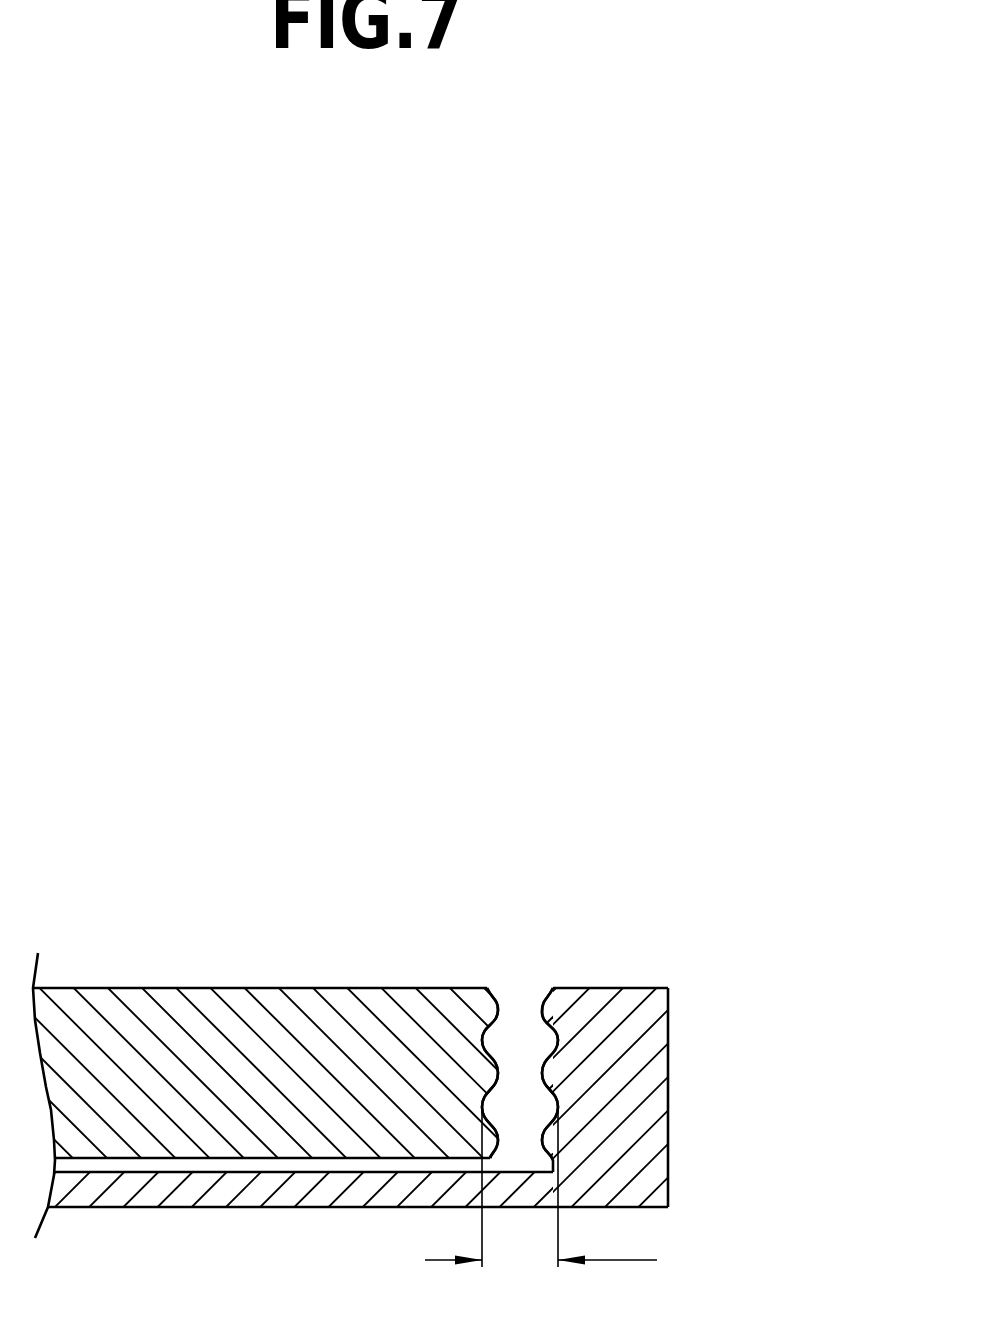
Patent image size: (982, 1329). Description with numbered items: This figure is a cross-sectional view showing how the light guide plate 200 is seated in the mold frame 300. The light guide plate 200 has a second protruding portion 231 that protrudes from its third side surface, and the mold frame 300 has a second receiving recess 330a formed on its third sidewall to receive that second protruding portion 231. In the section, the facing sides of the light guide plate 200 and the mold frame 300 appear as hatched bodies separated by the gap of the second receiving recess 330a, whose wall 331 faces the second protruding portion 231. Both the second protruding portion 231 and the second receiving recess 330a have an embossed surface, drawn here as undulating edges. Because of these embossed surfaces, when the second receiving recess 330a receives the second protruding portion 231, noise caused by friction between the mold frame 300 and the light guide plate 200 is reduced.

The light guide plate 200 is at (180, 935).
The second protruding portion 231 is at (498, 1010).
The mold frame 300 is at (706, 1112).
The wavy side surface of second member 331 is at (545, 1012).
The second receiving recess 330a is at (523, 1050).